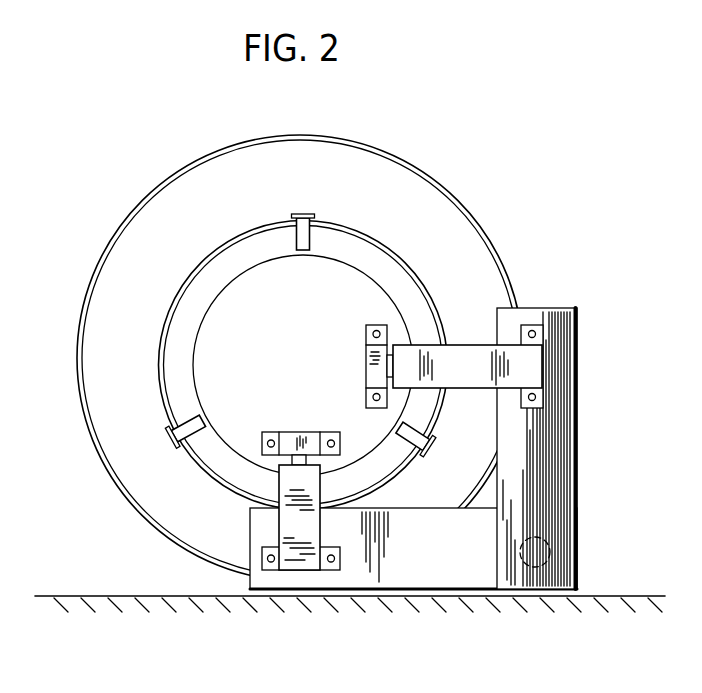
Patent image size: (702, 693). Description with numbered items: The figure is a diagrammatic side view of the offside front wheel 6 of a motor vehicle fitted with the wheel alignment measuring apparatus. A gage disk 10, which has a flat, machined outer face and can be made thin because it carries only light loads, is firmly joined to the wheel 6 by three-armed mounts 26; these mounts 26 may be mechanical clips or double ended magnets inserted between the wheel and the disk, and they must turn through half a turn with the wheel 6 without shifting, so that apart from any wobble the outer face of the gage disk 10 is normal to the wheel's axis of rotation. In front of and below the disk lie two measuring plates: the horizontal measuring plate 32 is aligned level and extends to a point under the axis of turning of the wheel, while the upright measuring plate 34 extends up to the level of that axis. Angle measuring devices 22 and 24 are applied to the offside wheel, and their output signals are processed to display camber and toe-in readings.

The offside front wheel 6 is at (97, 393).
The gage disk 10 is at (357, 285).
The angle measuring device 22 is at (283, 528).
The angle measuring device 24 is at (463, 355).
The three-armed mount 26 is at (302, 250).
The horizontal measuring plate 32 is at (418, 570).
The upright measuring plate 34 is at (553, 395).